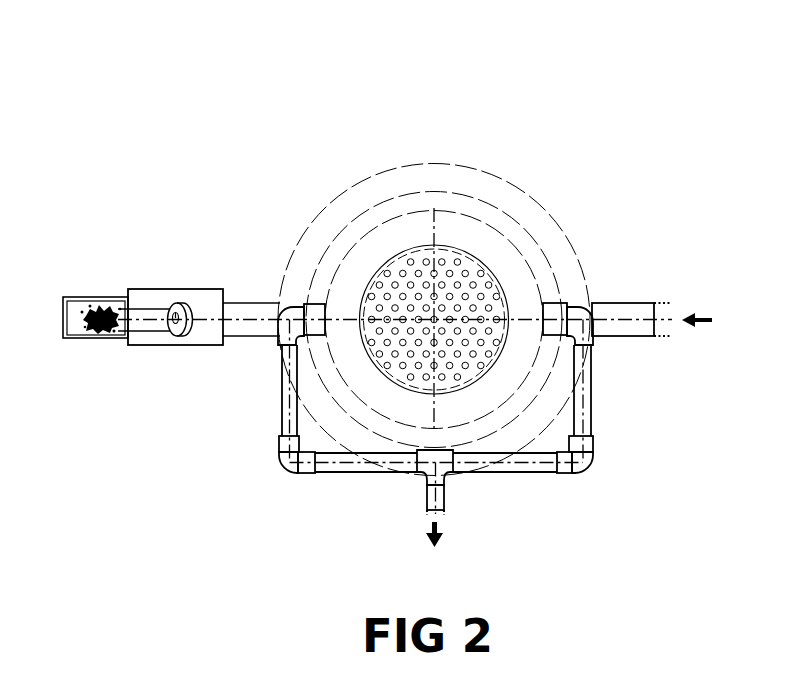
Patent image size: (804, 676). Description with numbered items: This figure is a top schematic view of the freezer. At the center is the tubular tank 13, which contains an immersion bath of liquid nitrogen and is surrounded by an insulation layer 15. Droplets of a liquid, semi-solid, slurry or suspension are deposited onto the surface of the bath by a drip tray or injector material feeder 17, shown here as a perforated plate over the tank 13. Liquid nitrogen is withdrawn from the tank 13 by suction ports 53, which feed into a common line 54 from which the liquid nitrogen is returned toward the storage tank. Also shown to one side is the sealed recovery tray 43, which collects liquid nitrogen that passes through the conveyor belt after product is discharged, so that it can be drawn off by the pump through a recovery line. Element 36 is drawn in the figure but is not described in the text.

The tubular tank 13 is at (355, 232).
The insulation layer 15 is at (434, 177).
The injector material feeder 17 is at (465, 280).
The feed conduit 36 is at (247, 315).
The sealed recovery tray 43 is at (88, 298).
The suction ports 53 is at (630, 312).
The common line 54 is at (432, 476).